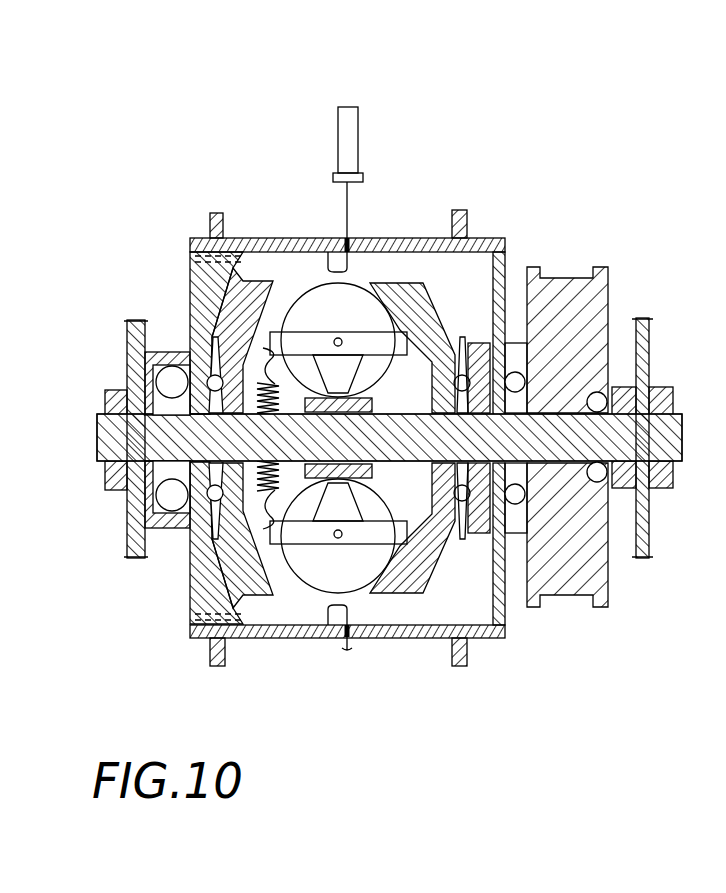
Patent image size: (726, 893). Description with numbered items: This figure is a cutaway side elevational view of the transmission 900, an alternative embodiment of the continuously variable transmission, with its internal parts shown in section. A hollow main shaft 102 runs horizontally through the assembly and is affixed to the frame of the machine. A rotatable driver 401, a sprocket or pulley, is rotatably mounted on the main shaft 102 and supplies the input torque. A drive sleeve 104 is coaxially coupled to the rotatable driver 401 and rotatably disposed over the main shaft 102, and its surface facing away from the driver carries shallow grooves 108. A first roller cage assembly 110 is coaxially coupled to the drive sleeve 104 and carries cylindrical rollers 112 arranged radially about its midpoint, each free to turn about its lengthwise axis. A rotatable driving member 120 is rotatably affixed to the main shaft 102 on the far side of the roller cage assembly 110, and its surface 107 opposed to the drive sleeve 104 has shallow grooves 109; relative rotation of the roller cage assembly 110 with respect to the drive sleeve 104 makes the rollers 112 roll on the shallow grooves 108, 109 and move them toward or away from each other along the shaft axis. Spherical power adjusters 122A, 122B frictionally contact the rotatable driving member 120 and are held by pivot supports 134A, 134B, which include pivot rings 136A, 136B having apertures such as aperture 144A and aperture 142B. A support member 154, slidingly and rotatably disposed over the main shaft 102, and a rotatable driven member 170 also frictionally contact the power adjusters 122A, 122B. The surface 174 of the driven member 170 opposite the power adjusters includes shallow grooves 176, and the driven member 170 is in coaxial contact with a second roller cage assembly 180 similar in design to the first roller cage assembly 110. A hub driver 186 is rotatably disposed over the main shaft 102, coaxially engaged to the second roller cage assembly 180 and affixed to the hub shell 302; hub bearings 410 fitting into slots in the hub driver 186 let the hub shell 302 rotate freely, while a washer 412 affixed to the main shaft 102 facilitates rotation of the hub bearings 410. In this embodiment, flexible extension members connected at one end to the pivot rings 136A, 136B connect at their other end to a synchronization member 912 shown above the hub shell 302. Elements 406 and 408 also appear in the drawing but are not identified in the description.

The transmission 900 is at (160, 120).
The synchronization member 912 is at (357, 140).
The main shaft 102 is at (100, 430).
The drive sleeve 104 is at (518, 500).
The surface 107 is at (430, 325).
The shallow grooves 108 is at (192, 630).
The shallow grooves 109 is at (510, 345).
The first roller cage assembly 110 is at (480, 535).
The cylindrical rollers 112 is at (525, 378).
The rotatable driving member 120 is at (460, 665).
The power adjuster 122A is at (300, 334).
The power adjuster 122B is at (330, 545).
The pivot support 134A is at (262, 325).
The pivot support 134B is at (275, 560).
The pivot ring 136A is at (305, 400).
The pivot ring 136B is at (375, 480).
The aperture 142B is at (350, 592).
The aperture 144A is at (370, 318).
The support member 154 is at (465, 540).
The rotatable driven member 170 is at (200, 240).
The surface 174 is at (228, 640).
The shallow grooves 176 is at (188, 640).
The second roller cage assembly 180 is at (205, 515).
The hub driver 186 is at (198, 328).
The hub shell 302 is at (423, 242).
The rotatable driver 401 is at (575, 277).
The disc 406 is at (640, 533).
The O-ring 408 is at (597, 484).
The hub bearings 410 is at (172, 503).
The washer 412 is at (135, 520).